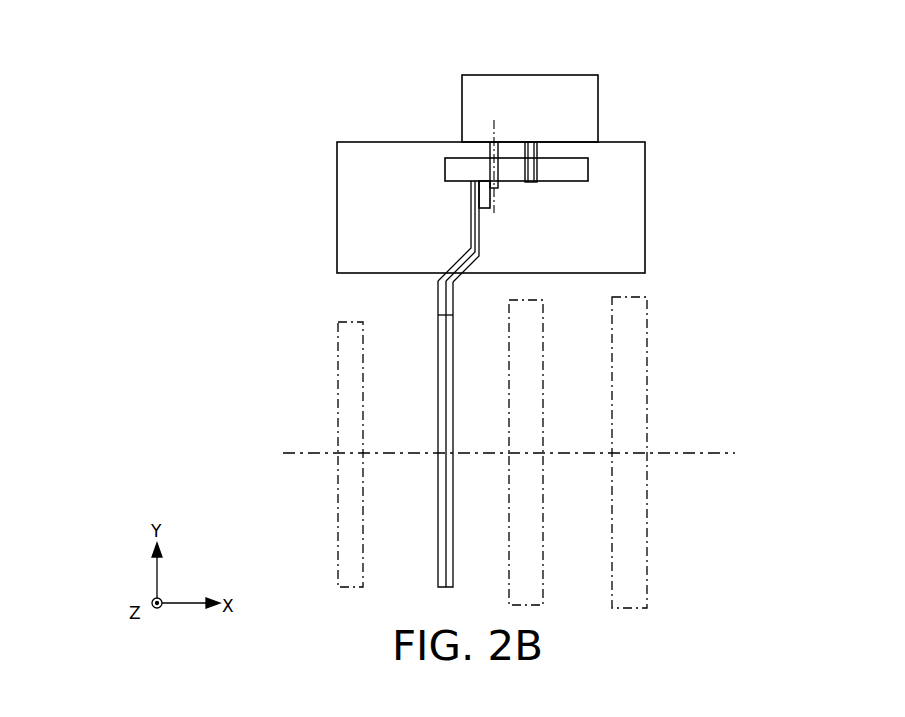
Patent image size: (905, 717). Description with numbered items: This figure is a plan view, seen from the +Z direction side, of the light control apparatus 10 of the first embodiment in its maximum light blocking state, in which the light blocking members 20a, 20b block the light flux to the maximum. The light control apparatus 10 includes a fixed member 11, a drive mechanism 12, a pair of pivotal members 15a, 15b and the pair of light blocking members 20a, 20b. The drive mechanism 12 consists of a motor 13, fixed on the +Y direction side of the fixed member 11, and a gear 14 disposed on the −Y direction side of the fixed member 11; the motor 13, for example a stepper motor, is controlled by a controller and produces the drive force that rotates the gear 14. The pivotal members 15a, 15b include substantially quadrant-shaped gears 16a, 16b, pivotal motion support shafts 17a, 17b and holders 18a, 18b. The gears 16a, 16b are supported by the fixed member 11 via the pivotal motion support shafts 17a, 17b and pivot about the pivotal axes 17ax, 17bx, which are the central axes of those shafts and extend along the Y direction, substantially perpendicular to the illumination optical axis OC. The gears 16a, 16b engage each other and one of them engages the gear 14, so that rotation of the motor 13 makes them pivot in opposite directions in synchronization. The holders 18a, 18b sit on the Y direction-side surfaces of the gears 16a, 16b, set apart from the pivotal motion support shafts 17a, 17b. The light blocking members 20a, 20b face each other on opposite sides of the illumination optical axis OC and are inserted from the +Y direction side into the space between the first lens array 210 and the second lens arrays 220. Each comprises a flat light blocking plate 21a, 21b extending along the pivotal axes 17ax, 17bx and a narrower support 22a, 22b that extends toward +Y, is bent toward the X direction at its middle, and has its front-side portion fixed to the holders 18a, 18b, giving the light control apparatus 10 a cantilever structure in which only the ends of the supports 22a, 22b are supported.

The light control apparatus 10 is at (246, 86).
The fixed member 11 is at (421, 142).
The drive mechanism 12 is at (566, 87).
The motor 13 is at (598, 104).
The gear 14 is at (540, 165).
The pivotal member 15a is at (639, 134).
The pivotal member 15b is at (639, 134).
The gear 16a is at (604, 176).
The gear 16b is at (588, 166).
The pivotal motion support shaft 17a is at (554, 134).
The pivotal motion support shaft 17b is at (554, 134).
The pivotal axis 17ax is at (565, 175).
The pivotal axis 17bx is at (575, 200).
The holder 18a is at (532, 227).
The holder 18b is at (493, 208).
The light blocking member 20a is at (290, 370).
The light blocking member 20b is at (188, 206).
The light blocking plate 21a is at (328, 418).
The light blocking plate 21b is at (437, 338).
The support 22a is at (353, 231).
The support 22b is at (458, 260).
The first lens array 210 is at (338, 368).
The second lens array 220 is at (543, 370).
The illumination optical axis OC is at (695, 451).